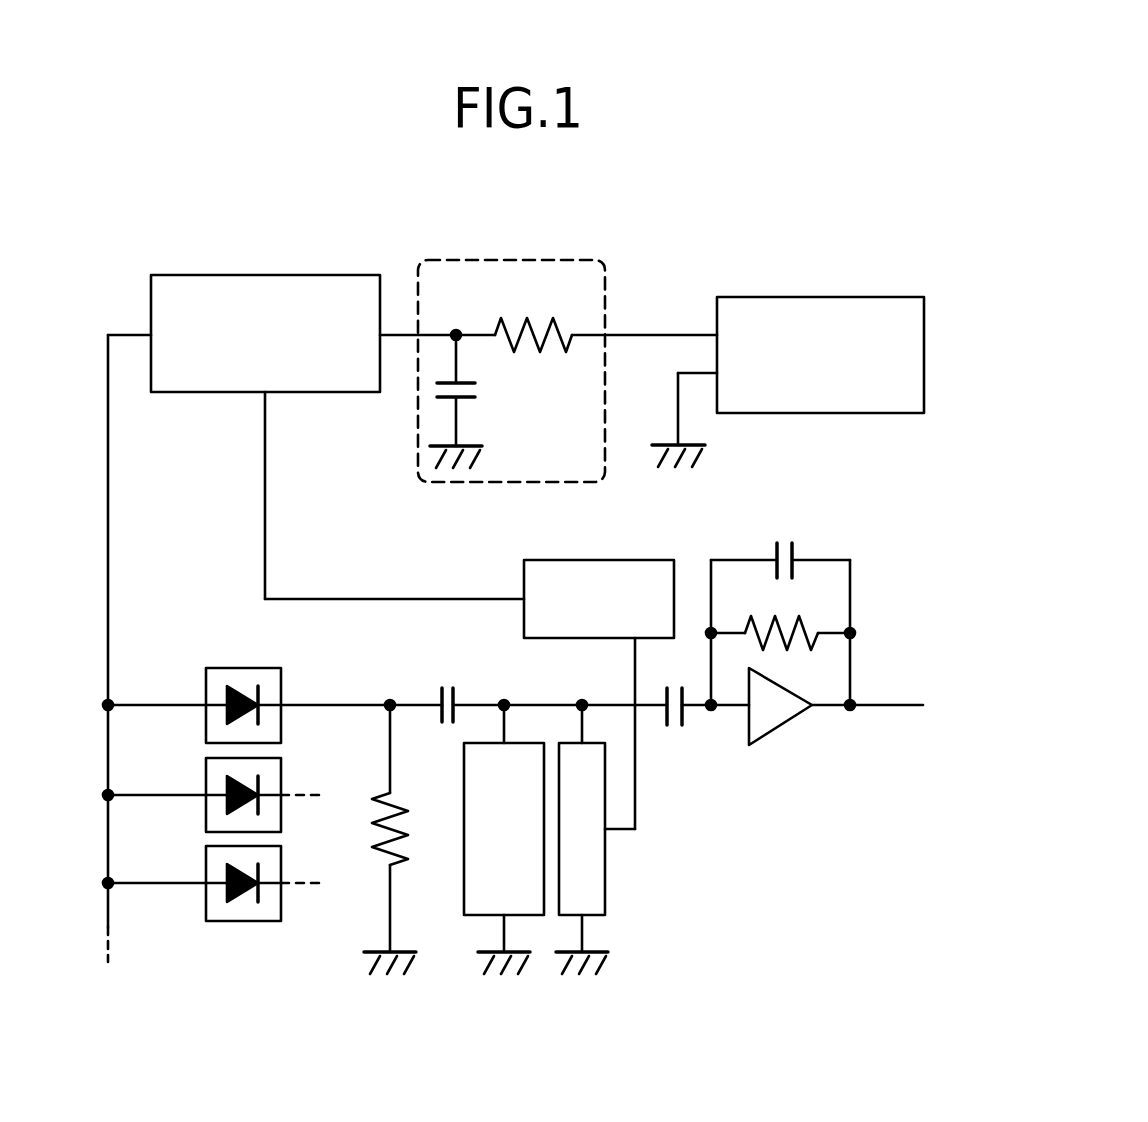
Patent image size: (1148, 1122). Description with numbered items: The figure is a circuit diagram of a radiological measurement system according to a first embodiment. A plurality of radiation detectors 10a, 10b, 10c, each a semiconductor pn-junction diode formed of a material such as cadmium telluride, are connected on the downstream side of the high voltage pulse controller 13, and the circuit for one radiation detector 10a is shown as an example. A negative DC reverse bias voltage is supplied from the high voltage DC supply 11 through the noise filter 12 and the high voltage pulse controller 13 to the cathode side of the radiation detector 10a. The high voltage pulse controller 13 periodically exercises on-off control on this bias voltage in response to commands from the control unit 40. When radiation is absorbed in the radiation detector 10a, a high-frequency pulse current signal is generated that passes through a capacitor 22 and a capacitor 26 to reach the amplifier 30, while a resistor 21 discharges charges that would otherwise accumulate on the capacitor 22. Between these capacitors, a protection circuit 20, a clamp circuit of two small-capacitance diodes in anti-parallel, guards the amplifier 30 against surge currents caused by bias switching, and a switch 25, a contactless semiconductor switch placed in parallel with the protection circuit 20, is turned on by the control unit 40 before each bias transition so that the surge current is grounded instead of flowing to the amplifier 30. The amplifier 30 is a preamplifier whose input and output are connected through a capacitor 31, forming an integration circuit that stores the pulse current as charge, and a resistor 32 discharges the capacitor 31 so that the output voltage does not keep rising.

The radiation detector 10a is at (243, 668).
The radiation detector 10b is at (206, 812).
The radiation detector 10c is at (243, 921).
The high voltage DC supply 11 is at (825, 296).
The noise filter 12 is at (507, 258).
The high voltage pulse controller 13 is at (268, 274).
The protection circuit 20 is at (465, 873).
The resistor 21 is at (372, 850).
The capacitor 22 is at (448, 687).
The switch 25 is at (605, 872).
The capacitor 26 is at (673, 727).
The amplifier 30 is at (782, 727).
The capacitor 31 is at (783, 545).
The resistor 32 is at (808, 617).
The control unit 40 is at (600, 560).